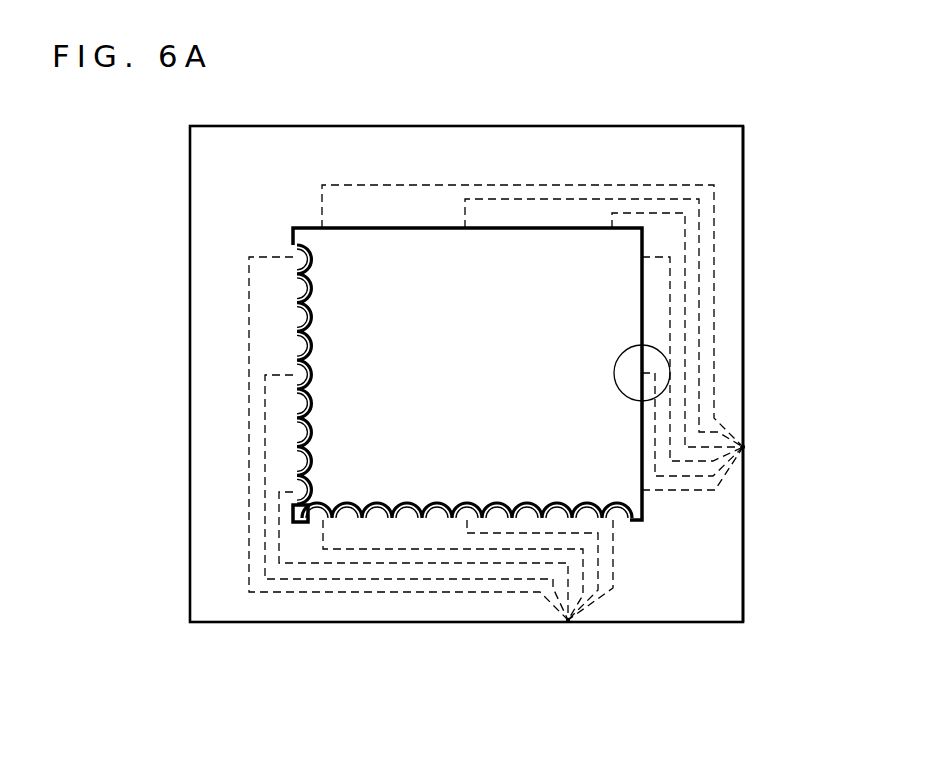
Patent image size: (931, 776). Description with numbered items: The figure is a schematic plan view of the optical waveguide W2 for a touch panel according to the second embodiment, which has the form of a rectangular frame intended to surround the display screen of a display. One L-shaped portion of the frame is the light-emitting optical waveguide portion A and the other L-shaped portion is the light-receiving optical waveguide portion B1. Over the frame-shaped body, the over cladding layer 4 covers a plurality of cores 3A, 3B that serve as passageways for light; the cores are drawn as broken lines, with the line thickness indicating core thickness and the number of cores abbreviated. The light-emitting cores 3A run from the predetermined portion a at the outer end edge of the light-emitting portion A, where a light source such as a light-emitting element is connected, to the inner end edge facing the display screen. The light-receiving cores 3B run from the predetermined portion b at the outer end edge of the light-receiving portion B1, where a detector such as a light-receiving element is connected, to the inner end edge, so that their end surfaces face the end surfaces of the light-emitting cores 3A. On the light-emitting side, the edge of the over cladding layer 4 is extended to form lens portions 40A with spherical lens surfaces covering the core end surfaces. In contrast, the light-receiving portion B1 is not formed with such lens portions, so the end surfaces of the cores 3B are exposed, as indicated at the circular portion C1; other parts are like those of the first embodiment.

The optical waveguide for the touch panel W2 is at (186, 239).
The light-emitting optical waveguide portion A is at (196, 504).
The over cladding layer 4 is at (730, 563).
The light-receiving optical waveguide portion B1 is at (742, 242).
The lens portion 40A is at (300, 430).
The circular portion C1 is at (650, 343).
The cores 3B is at (670, 285).
The predetermined portion b is at (743, 447).
The cores 3A is at (412, 549).
The predetermined portion a is at (568, 622).